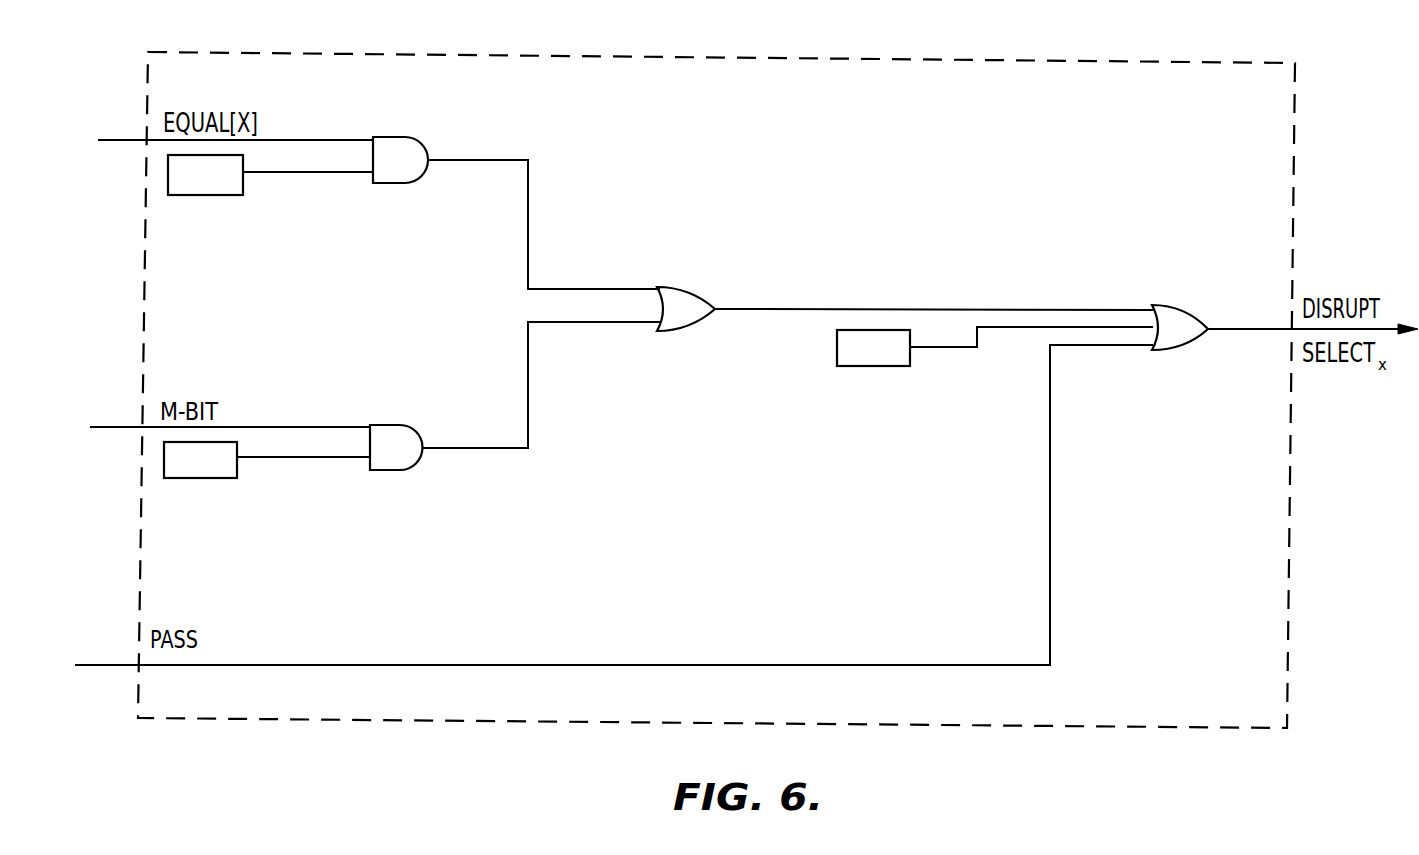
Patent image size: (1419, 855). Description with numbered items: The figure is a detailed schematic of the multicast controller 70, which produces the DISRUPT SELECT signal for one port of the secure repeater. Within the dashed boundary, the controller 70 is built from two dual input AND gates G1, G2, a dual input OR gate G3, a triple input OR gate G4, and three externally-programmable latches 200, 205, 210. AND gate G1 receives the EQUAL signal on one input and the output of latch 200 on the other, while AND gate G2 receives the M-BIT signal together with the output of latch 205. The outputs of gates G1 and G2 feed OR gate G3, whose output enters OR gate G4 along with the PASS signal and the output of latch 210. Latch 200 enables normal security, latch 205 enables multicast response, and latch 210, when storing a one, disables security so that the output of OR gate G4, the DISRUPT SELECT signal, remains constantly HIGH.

The multicast controller 70 is at (543, 52).
The latch 200 is at (207, 195).
The latch 205 is at (207, 478).
The latch 210 is at (875, 366).
The AND gate G1 is at (412, 138).
The AND gate G2 is at (410, 427).
The OR gate G3 is at (697, 290).
The OR gate G4 is at (1195, 312).